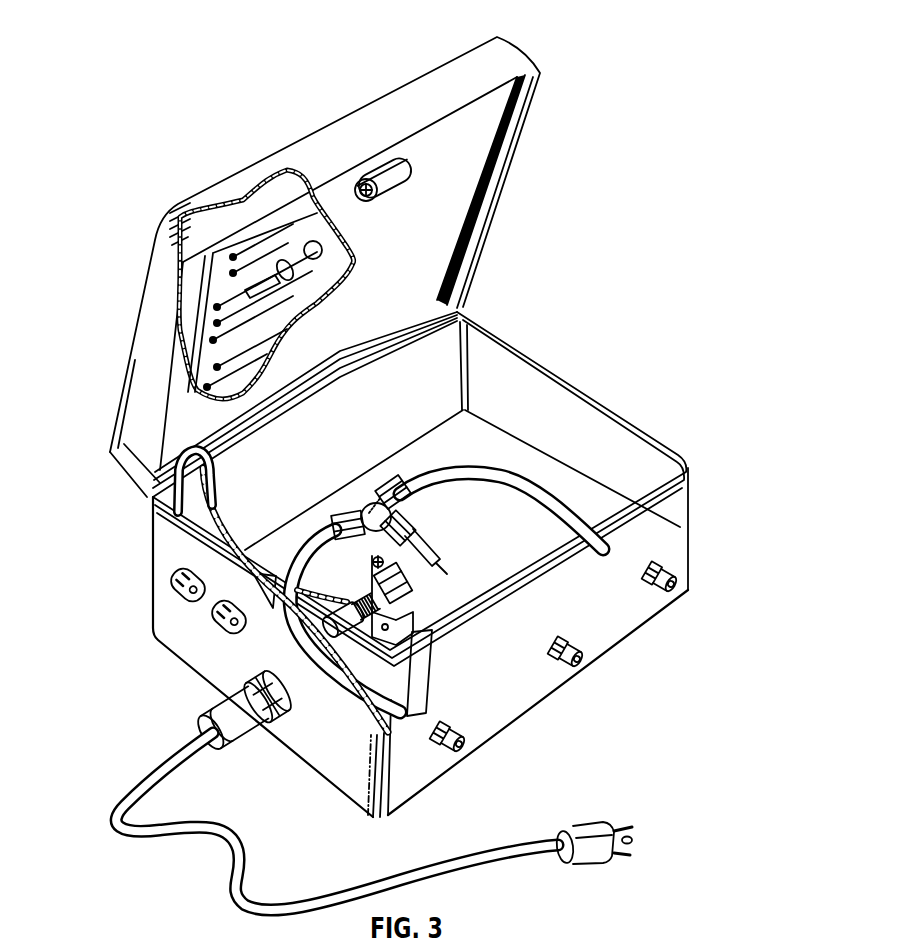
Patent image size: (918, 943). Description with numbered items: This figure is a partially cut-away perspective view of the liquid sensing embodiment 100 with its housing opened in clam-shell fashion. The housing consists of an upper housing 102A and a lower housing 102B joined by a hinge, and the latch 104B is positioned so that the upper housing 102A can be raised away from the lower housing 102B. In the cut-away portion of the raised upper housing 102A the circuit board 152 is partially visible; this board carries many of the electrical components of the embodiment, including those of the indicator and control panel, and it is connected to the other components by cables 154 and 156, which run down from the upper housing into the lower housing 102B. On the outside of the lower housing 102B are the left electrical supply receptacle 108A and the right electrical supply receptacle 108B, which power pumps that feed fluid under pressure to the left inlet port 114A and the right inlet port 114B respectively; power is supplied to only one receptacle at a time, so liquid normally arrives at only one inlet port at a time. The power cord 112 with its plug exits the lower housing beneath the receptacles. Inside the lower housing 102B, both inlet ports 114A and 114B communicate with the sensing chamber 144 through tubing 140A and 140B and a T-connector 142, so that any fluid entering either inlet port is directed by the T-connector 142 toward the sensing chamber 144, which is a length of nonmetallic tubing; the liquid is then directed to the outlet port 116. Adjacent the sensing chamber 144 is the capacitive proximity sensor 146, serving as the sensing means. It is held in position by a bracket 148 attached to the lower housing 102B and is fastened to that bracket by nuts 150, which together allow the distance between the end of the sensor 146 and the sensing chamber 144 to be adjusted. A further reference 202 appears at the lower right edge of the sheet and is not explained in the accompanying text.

The apparatus 100 is at (388, 78).
The upper housing 102A is at (535, 56).
The lower housing 102B is at (665, 527).
The latch 104B is at (397, 188).
The left electrical supply receptacle 108A is at (200, 634).
The right electrical supply receptacle 108B is at (157, 586).
The power cord 112 is at (588, 805).
The left inlet port 114A is at (467, 750).
The right inlet port 114B is at (688, 584).
The outlet port 116 is at (596, 660).
The tubing 140A is at (430, 642).
The tubing 140B is at (520, 492).
The T-connector 142 is at (373, 500).
The sensing chamber 144 is at (427, 553).
The capacitive proximity sensor 146 is at (352, 581).
The bracket 148 is at (405, 614).
The nuts 150 is at (386, 575).
The circuit board 152 is at (255, 214).
The cable 154 is at (217, 510).
The cable 156 is at (212, 478).
The reference 202 is at (782, 942).